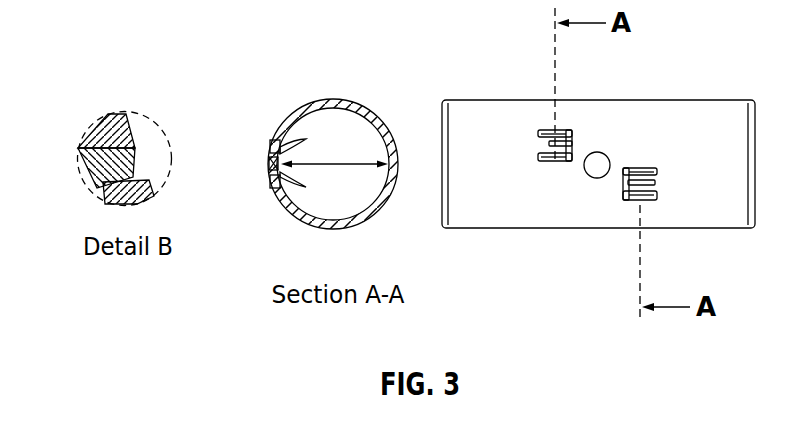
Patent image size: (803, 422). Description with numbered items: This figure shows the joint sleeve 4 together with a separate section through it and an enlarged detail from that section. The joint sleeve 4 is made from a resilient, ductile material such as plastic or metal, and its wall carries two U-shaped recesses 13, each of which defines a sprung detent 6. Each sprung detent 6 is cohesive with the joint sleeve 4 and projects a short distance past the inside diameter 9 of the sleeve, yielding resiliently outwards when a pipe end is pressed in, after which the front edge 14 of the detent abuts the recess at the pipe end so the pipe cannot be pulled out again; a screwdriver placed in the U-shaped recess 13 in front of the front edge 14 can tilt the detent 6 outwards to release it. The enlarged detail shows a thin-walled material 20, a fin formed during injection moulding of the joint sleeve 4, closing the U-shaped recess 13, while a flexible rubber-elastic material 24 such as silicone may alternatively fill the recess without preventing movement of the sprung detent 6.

The joint sleeve 4 is at (307, 221).
The sprung detent 6 is at (102, 132).
The inner diameter 9 is at (353, 163).
The U-shaped recess 13 is at (673, 248).
The front edge of the detent 14 is at (570, 132).
The thin-walled material 20 is at (128, 160).
The flexible rubber-elastic material 24 is at (102, 172).